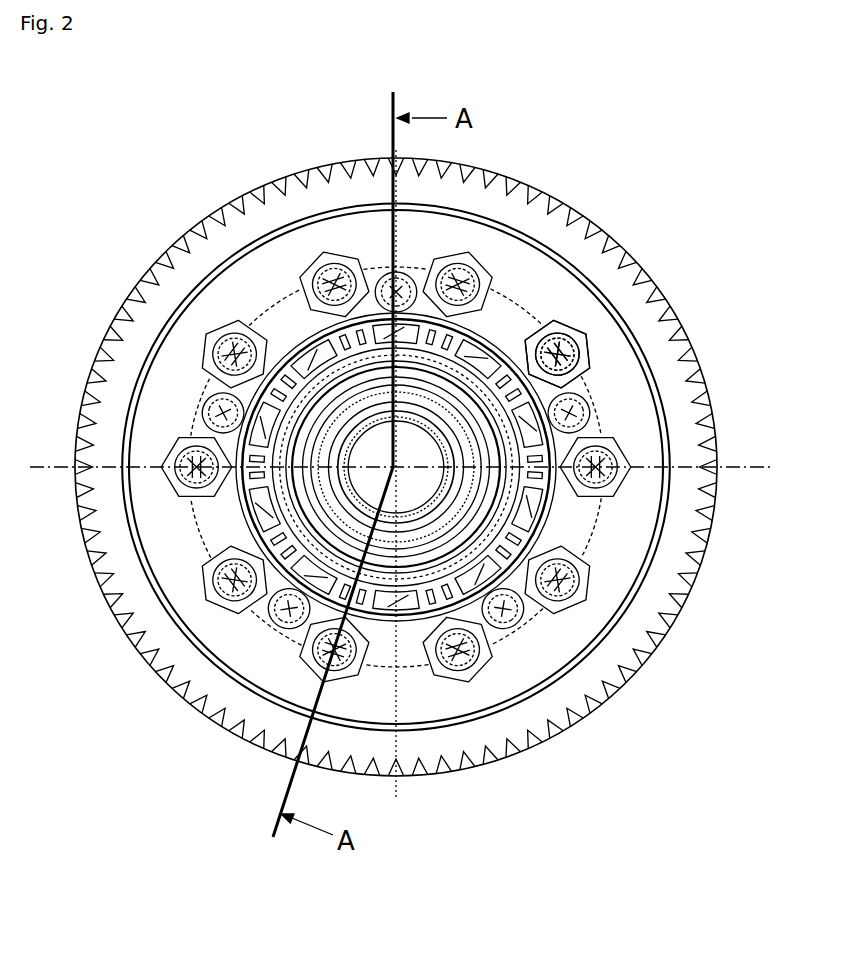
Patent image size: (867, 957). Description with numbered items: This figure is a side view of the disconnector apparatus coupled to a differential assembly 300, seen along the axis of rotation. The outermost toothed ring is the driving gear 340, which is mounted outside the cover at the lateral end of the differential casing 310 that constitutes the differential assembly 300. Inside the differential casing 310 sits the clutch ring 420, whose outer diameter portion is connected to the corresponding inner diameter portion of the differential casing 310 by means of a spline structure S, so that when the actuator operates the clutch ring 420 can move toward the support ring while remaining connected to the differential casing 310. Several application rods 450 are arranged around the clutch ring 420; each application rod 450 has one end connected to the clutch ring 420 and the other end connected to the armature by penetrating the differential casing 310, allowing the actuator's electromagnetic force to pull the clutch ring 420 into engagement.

The differential assembly 300 is at (610, 230).
The driving gear 340 is at (170, 247).
The differential casing 310 is at (423, 660).
The clutch ring 420 is at (543, 530).
The application rod 450 is at (350, 258).
The spline structure S is at (580, 390).